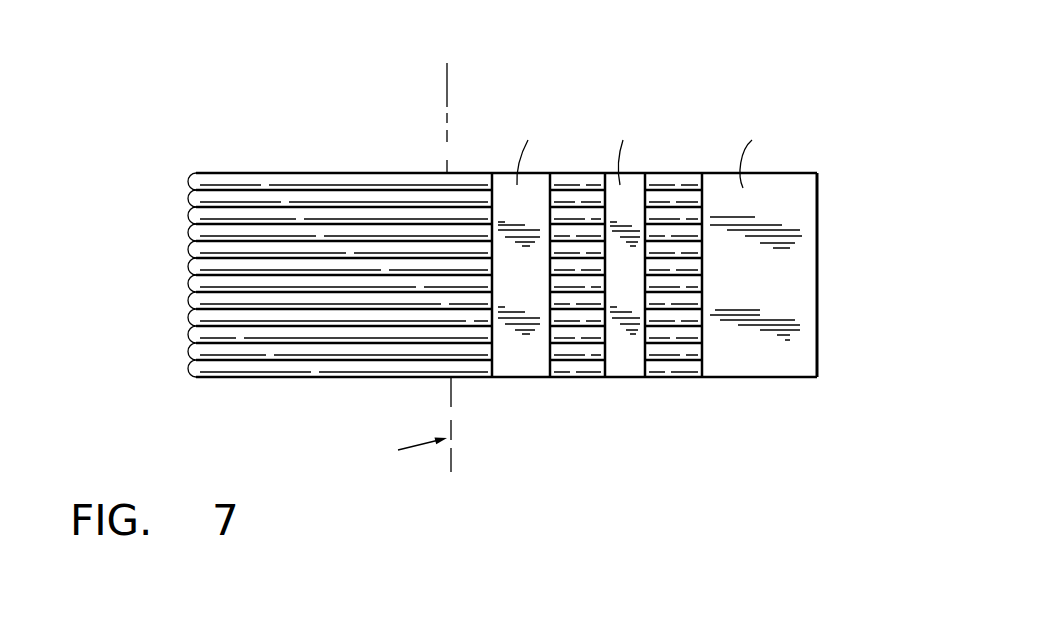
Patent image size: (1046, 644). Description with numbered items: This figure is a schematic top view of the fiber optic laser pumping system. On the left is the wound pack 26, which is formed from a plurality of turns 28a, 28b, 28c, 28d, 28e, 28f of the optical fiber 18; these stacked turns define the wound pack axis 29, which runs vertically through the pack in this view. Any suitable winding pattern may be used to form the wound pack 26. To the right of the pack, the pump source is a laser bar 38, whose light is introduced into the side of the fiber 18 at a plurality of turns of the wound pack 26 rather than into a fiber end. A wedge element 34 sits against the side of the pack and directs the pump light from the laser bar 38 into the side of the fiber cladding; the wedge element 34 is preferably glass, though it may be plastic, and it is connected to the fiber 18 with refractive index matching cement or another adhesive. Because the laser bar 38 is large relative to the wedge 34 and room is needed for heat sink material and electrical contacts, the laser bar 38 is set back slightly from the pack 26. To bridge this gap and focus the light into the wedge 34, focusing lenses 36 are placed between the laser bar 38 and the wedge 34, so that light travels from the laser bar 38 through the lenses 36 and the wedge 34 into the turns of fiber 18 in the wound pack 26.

The optical fiber 18 is at (349, 171).
The wound pack 26 is at (176, 351).
The turn of the optical fiber 28a is at (188, 182).
The turn of the optical fiber 28b is at (188, 198).
The turn of the optical fiber 28c is at (188, 215).
The turn of the optical fiber 28d is at (188, 232).
The turn of the optical fiber 28e is at (188, 249).
The turn of the optical fiber 28f is at (188, 266).
The wound pack axis 29 is at (443, 102).
The wedge element 34 is at (518, 366).
The focusing lens 36 is at (627, 366).
The laser bar 38 is at (793, 268).